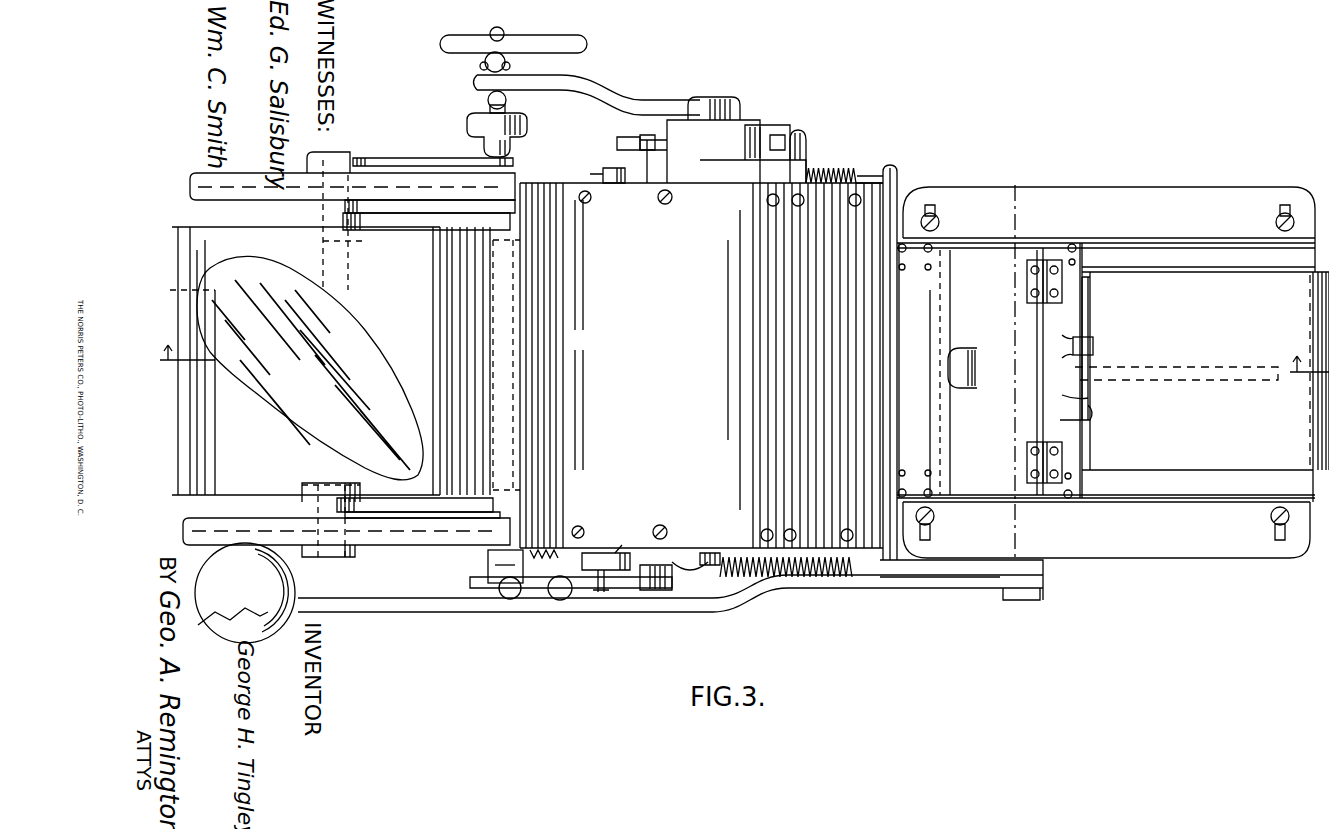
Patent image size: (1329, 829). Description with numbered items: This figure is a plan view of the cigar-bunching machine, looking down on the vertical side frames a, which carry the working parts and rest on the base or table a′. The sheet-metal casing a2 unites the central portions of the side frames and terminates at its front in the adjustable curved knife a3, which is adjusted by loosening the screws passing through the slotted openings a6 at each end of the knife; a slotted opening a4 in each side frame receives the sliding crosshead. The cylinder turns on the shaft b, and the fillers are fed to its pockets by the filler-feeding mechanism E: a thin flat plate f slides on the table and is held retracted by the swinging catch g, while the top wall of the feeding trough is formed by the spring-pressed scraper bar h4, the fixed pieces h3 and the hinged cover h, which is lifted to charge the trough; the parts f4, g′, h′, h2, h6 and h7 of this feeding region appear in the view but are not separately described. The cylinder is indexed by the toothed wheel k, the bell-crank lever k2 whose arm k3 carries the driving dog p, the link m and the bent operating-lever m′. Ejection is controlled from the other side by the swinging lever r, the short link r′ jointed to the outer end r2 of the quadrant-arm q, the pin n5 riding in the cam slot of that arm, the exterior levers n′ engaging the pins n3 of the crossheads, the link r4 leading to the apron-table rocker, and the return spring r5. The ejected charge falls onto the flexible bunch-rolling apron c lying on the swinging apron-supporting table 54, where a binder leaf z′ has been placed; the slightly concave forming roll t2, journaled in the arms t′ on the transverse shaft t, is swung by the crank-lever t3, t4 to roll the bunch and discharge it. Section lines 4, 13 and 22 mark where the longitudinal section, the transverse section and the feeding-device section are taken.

The side frames a is at (398, 180).
The base or table a′ is at (1113, 372).
The sheet-metal casing a2 is at (701, 365).
The cutter or knife a3 is at (845, 200).
The slotted opening a4 is at (1058, 252).
The slotted openings a6 is at (932, 205).
The shaft b is at (697, 98).
The bunch-rolling flexible apron c is at (300, 361).
The filler-feeding mechanism E is at (1067, 172).
The flat plate f is at (1158, 371).
The plate edge f4 is at (1313, 305).
The swinging catch g is at (1088, 310).
The guide clip g′ is at (1093, 347).
The hinged cover h is at (1006, 372).
The hinge h′ is at (1045, 305).
The plate edge h2 is at (938, 322).
The fixed pieces h3 is at (924, 370).
The spring-pressed bar h4 is at (876, 380).
The pocket h6 is at (958, 378).
The spring h7 is at (810, 572).
The wheel k is at (611, 146).
The bell-crank lever k2 is at (640, 100).
The arm of bell-crank lever k3 is at (757, 125).
The link m is at (483, 63).
The operating-lever m′ is at (538, 40).
The exterior lever n′ is at (602, 356).
The pin n3 is at (612, 170).
The roll or pin n5 is at (600, 592).
The dog p is at (644, 150).
The quadrant-arm q is at (488, 572).
The operating-lever r is at (425, 605).
The short link r′ is at (672, 588).
The outer end of quadrant-arm r2 is at (617, 588).
The link r4 is at (560, 600).
The spring r5 is at (545, 585).
The shaft t is at (330, 262).
The roll-carrying arms t′ is at (395, 205).
The forming roll t2 is at (520, 320).
The crank-handle t3 is at (447, 158).
The crank-lever t4 is at (472, 125).
The binder z′ is at (165, 289).
The section line 4 4 is at (155, 353).
The section line 13 13 is at (1150, 212).
The section line 22 22 is at (1018, 187).
The swinging apron-supporting table 54 is at (250, 238).